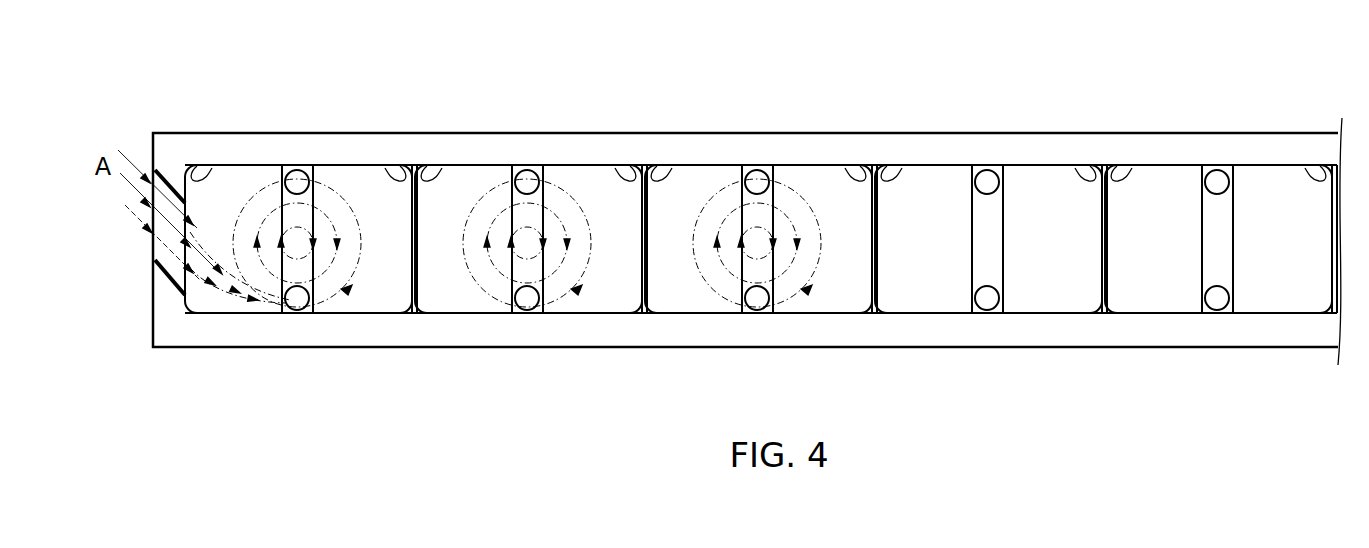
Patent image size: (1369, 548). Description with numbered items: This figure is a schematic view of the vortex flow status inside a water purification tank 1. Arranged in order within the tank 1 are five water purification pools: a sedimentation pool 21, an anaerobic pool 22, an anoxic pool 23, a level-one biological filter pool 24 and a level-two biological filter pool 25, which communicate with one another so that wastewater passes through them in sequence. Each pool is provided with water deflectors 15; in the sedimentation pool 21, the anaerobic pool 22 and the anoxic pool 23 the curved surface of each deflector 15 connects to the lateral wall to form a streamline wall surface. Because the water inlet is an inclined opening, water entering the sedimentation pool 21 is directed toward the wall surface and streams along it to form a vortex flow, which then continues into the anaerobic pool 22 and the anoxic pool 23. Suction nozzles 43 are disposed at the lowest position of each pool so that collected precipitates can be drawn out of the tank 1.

The water purification tank 1 is at (244, 348).
The water deflector 15 is at (212, 168).
The sedimentation pool 21 is at (243, 180).
The anaerobic pool 22 is at (473, 180).
The anoxic pool 23 is at (703, 180).
The level-1 biological filter pool 24 is at (933, 180).
The level-2 biological filter pool 25 is at (1163, 180).
The suction nozzle 43 is at (298, 297).